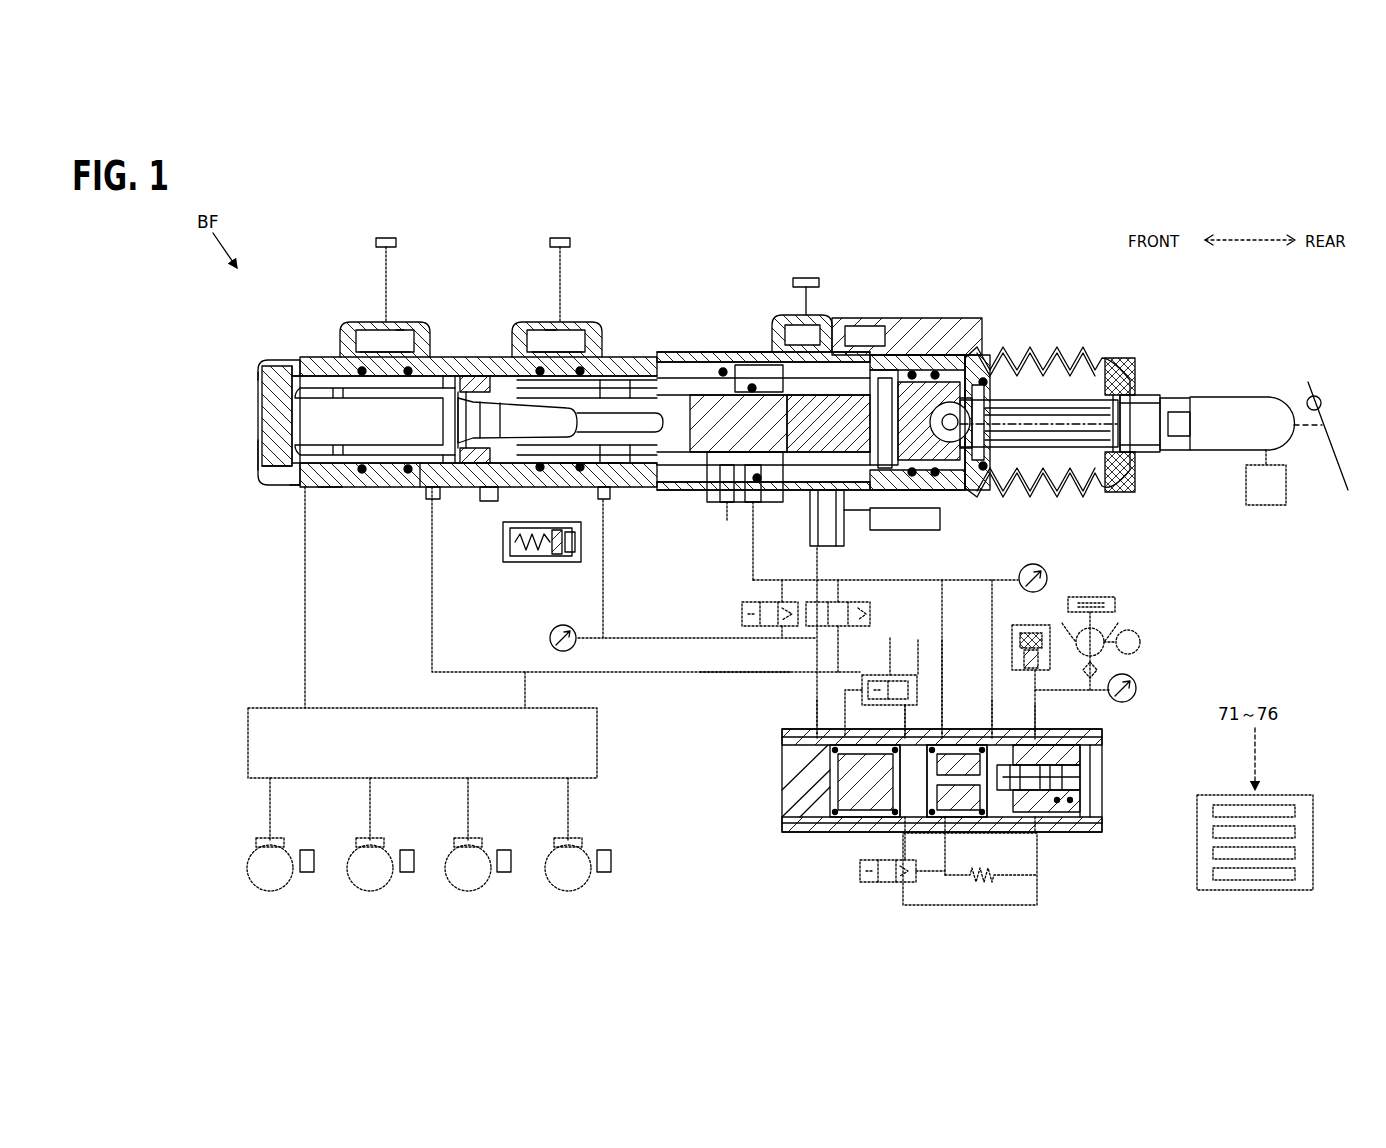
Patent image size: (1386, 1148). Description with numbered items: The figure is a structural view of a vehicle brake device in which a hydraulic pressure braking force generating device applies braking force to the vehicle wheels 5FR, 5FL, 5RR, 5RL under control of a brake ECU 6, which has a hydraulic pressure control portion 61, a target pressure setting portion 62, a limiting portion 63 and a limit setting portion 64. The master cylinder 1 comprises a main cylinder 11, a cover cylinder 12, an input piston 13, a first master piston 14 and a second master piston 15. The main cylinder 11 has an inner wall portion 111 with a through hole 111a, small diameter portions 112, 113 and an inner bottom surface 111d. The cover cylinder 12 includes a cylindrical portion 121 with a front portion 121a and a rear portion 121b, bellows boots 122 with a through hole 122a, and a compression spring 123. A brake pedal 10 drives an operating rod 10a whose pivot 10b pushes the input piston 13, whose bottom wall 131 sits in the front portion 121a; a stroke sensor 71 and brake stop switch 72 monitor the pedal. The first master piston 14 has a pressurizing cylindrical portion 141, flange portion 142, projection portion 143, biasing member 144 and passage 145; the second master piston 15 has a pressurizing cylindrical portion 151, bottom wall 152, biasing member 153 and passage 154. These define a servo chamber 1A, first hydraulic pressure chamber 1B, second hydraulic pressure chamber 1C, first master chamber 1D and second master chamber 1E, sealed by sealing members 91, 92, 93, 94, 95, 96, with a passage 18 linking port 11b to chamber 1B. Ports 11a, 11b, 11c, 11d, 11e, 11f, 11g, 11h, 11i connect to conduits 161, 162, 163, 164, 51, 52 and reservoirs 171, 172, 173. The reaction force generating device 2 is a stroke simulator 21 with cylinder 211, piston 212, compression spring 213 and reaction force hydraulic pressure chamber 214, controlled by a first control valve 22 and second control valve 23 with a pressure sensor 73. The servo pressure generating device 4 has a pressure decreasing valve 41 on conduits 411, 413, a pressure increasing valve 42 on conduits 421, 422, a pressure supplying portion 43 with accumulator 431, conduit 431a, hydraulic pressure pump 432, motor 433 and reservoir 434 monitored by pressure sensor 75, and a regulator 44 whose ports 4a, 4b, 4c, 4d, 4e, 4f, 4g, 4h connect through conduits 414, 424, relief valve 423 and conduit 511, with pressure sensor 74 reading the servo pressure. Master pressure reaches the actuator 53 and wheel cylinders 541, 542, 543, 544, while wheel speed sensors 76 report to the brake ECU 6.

The master cylinder 1 is at (245, 378).
The reaction force generating device 2 is at (525, 608).
The servo pressure generating device 4 is at (1115, 762).
The brake ECU 6 is at (1292, 795).
The brake pedal 10 is at (1308, 385).
The main cylinder 11 is at (292, 380).
The cover cylinder 12 is at (1100, 580).
The input piston 13 is at (1020, 360).
The first master piston 14 is at (620, 470).
The second master piston 15 is at (462, 395).
The passage 18 is at (925, 375).
The stroke simulator 21 is at (520, 522).
The first control valve 22 is at (758, 605).
The second control valve 23 is at (815, 603).
The pressure decreasing valve 41 is at (862, 680).
The pressure increasing valve 42 is at (862, 882).
The pressure supplying portion 43 is at (1180, 640).
The regulator 44 is at (1102, 806).
The conduit 51 is at (432, 618).
The conduit 52 is at (305, 630).
The actuator 53 is at (372, 710).
The hydraulic pressure control portion 61 is at (1300, 812).
The target pressure setting portion 62 is at (1300, 832).
The limiting portion 63 is at (1300, 852).
The limit setting portion 64 is at (1300, 872).
The stroke sensor 71 is at (1265, 505).
The brake stop switch 72 is at (1305, 400).
The pressure sensor 73 is at (568, 626).
The pressure sensor 74 is at (1022, 590).
The pressure sensor 75 is at (1130, 700).
The wheel speed sensor 76 is at (314, 870).
The sealing member 91 is at (568, 345).
The sealing member 92 is at (532, 360).
The sealing member 93 is at (428, 350).
The sealing member 94 is at (352, 360).
The sealing member 95 is at (955, 375).
The sealing member 96 is at (990, 380).
The operating rod 10a is at (1095, 395).
The pivot 10b is at (1085, 400).
The port 11a is at (805, 505).
The port 11b is at (832, 330).
The port 11c is at (758, 500).
The port 11d is at (735, 492).
The port 11e is at (608, 492).
The port 11f is at (550, 325).
The port 11g is at (442, 520).
The port 11h is at (396, 330).
The port 11i is at (295, 490).
The servo chamber 1A is at (710, 490).
The first hydraulic pressure chamber 1B is at (915, 492).
The second hydraulic pressure chamber 1C is at (672, 470).
The first master chamber 1D is at (495, 500).
The second master chamber 1E is at (330, 490).
The inner wall portion 111 is at (738, 352).
The through hole 111a is at (715, 352).
The inner bottom surface 111d is at (262, 456).
The small diameter portion 112 is at (610, 475).
The small diameter portion 113 is at (430, 490).
The cylindrical portion 121 is at (1070, 540).
The front portion 121a is at (975, 465).
The rear portion 121b is at (975, 470).
The boots 122 is at (1160, 495).
The through hole 122a is at (1120, 395).
The compression spring 123 is at (1180, 500).
The bottom wall 131 is at (968, 370).
The pressurizing cylindrical portion 141 is at (600, 360).
The flange portion 142 is at (668, 365).
The projection portion 143 is at (890, 370).
The biasing member 144 is at (492, 365).
The passage 145 is at (490, 395).
The pressurizing cylindrical portion 151 is at (372, 488).
The bottom wall 152 is at (455, 490).
The biasing member 153 is at (296, 355).
The passage 154 is at (370, 330).
The conduit 161 is at (850, 520).
The conduit 162 is at (776, 548).
The conduit 163 is at (740, 555).
The conduit 164 is at (697, 569).
The reservoir 171 is at (802, 303).
The reservoir 172 is at (558, 267).
The reservoir 173 is at (386, 267).
The cylinder 211 is at (545, 522).
The piston 212 is at (555, 562).
The compression spring 213 is at (512, 562).
The reaction force hydraulic pressure chamber 214 is at (572, 562).
The conduit 411 is at (918, 640).
The conduit 413 is at (892, 718).
The conduit 414 is at (943, 665).
The conduit 421 is at (895, 850).
The conduit 422 is at (925, 908).
The relief valve 423 is at (978, 882).
The conduit 424 is at (945, 868).
The accumulator 431 is at (1035, 690).
The conduit 431a is at (1050, 692).
The hydraulic pressure pump 432 is at (1036, 635).
The motor 433 is at (1140, 632).
The reservoir 434 is at (1118, 605).
The port 4a is at (1040, 738).
The port 4b is at (1038, 835).
The port 4c is at (995, 738).
The port 4d is at (945, 738).
The port 4e is at (950, 834).
The port 4f is at (912, 738).
The port 4g is at (905, 834).
The port 4h is at (825, 732).
The conduit 511 is at (745, 672).
The wheel cylinder 541 is at (280, 843).
The wheel cylinder 542 is at (382, 843).
The wheel cylinder 543 is at (478, 843).
The wheel cylinder 544 is at (578, 843).
The vehicle wheel 5FR is at (250, 878).
The vehicle wheel 5FL is at (378, 888).
The vehicle wheel 5RR is at (475, 888).
The vehicle wheel 5RL is at (573, 888).